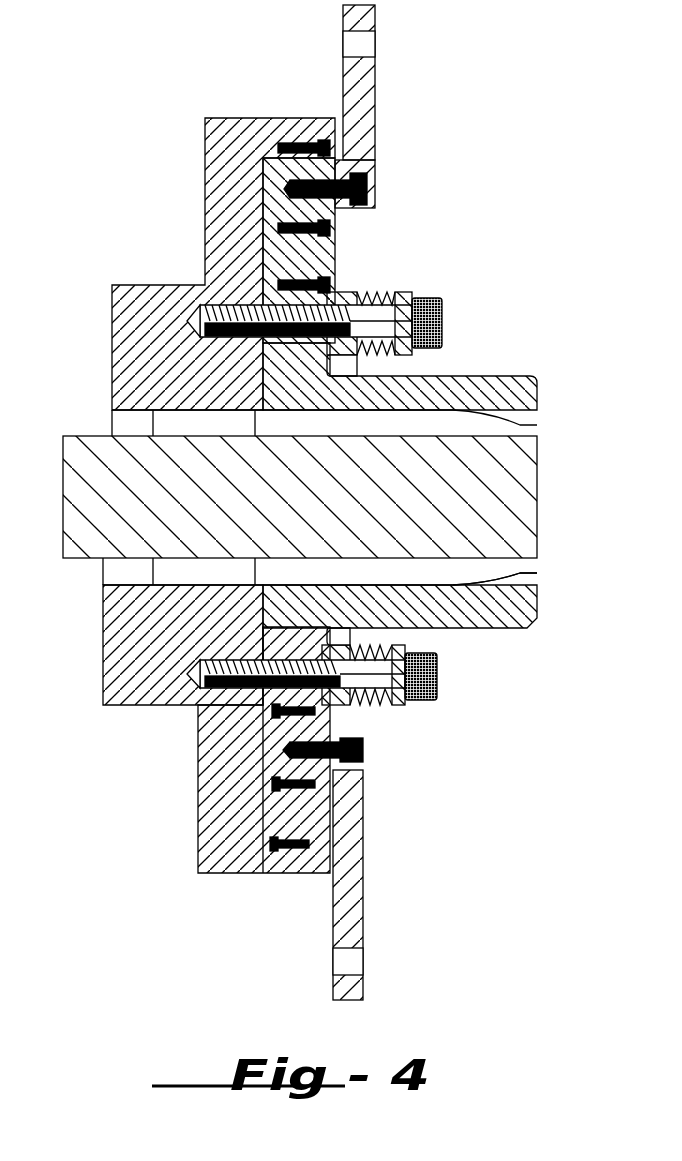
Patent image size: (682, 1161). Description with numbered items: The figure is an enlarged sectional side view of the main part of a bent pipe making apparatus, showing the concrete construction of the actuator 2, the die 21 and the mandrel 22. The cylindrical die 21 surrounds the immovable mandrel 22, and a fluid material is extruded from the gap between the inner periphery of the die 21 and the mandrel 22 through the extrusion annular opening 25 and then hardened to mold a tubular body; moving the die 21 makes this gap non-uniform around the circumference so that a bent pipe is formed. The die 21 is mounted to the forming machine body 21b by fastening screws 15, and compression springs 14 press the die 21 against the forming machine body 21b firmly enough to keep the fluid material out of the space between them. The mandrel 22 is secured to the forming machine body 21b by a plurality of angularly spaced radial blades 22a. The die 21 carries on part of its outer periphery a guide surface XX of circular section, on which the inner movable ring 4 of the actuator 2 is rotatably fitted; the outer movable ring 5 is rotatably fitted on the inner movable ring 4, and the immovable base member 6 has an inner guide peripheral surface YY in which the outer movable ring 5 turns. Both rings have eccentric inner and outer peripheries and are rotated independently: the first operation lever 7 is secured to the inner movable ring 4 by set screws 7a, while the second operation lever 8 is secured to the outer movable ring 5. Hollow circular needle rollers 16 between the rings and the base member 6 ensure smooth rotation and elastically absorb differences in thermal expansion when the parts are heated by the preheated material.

The actuator 2 is at (267, 117).
The inner movable ring 4 is at (335, 720).
The outer movable ring 5 is at (345, 163).
The base member 6 is at (297, 875).
The first operation lever 7 is at (365, 898).
The set screws 7a is at (362, 752).
The second operation lever 8 is at (365, 80).
The compression springs 14 is at (385, 295).
The fastening screws 15 is at (445, 310).
The rollers 16 is at (270, 150).
The die 21 is at (537, 403).
The forming machine body 21b is at (115, 690).
The mandrel 22 is at (433, 480).
The radial blades 22a is at (160, 413).
The extrusion annular opening 25 is at (535, 570).
The guide surface XX is at (335, 282).
The inner guide peripheral surface YY is at (282, 162).